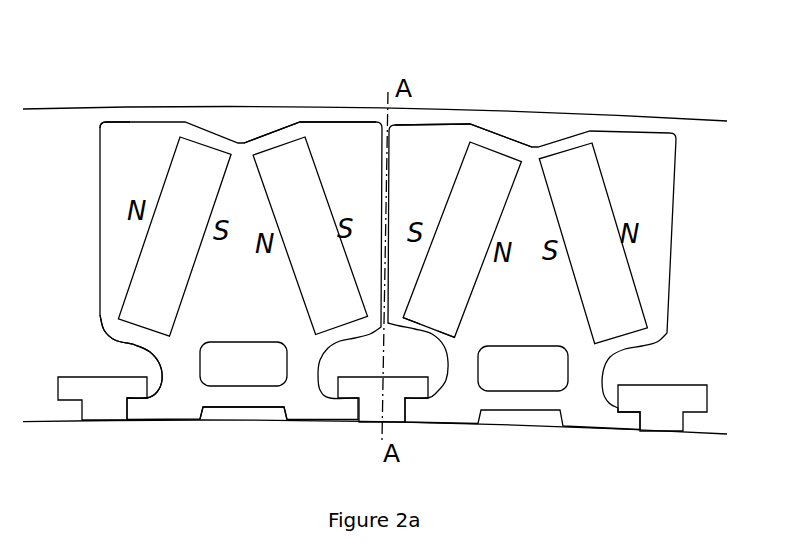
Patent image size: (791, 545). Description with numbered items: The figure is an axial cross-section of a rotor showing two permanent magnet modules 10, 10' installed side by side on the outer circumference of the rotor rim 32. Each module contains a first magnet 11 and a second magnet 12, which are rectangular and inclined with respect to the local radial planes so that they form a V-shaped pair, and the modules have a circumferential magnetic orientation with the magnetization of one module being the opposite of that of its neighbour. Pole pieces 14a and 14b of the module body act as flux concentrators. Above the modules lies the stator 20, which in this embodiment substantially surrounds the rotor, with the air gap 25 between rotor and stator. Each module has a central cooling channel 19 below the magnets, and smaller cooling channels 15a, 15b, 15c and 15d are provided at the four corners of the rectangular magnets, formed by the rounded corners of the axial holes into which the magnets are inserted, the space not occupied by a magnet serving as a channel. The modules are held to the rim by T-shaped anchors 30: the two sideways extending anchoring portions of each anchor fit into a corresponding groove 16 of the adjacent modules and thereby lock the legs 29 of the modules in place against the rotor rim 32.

The stator 20 is at (65, 108).
The permanent magnet module 10 is at (241, 218).
The permanent magnet module 10' is at (532, 222).
The first magnet 11 is at (182, 182).
The second magnet 12 is at (302, 183).
The pole piece 14a is at (443, 157).
The pole piece 14b is at (355, 155).
The cooling channel 15a is at (485, 137).
The cooling channel 15b is at (530, 147).
The cooling channel 15c is at (405, 322).
The cooling channel 15d is at (457, 333).
The air gap 25 is at (93, 117).
The groove 16 is at (138, 363).
The central cooling channel 19 is at (258, 365).
The leg 29 is at (147, 405).
The T-shaped anchor 30 is at (102, 392).
The rotor rim 32 is at (243, 420).